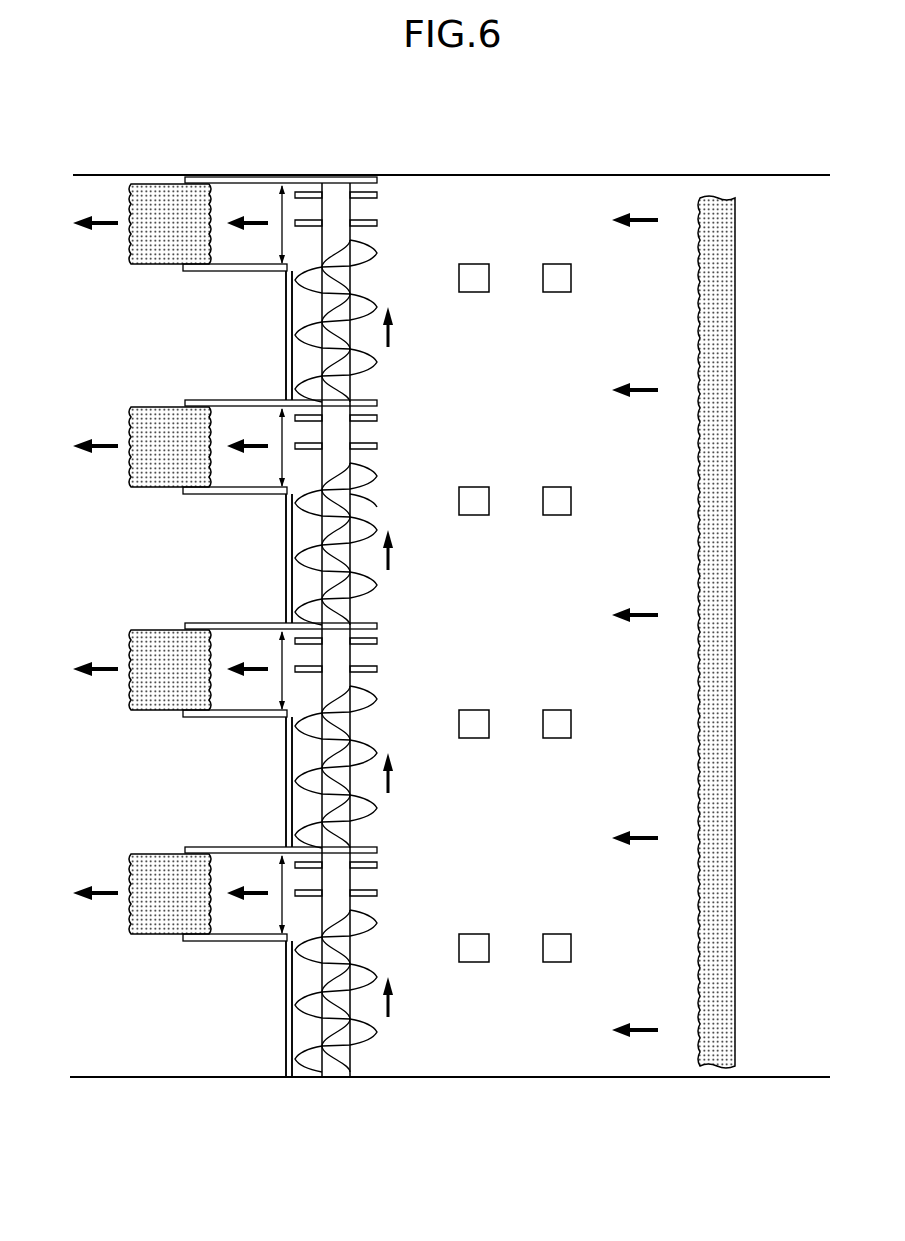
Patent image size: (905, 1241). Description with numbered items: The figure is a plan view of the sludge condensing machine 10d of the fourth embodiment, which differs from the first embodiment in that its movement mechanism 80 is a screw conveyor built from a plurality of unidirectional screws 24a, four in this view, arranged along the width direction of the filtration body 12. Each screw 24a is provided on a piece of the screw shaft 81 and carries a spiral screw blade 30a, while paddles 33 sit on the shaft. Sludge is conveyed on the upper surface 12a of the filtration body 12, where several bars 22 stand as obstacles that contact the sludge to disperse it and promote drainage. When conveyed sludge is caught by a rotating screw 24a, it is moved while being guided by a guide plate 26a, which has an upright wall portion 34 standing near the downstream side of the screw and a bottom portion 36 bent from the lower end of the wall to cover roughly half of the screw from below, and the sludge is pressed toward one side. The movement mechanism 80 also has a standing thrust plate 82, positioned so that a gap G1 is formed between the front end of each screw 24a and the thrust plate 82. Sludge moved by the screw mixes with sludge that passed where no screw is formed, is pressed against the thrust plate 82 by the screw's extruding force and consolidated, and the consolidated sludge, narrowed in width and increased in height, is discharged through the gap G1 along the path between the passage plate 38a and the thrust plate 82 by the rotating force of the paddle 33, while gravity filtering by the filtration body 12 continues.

The sludge condensing machine 10d is at (113, 107).
The filtration body 12 is at (624, 176).
The upper surface of the filtration body 12a is at (573, 193).
The bar 22 is at (560, 293).
The screw 24a is at (402, 291).
The guide plate 26a is at (286, 295).
The screw blade 30a is at (378, 359).
The paddle 33 is at (377, 195).
The wall portion 34 is at (286, 333).
The bottom portion 36 is at (300, 369).
The passage plate 38a is at (192, 272).
The movement mechanism 80 is at (313, 115).
The screw shaft 81 is at (350, 510).
The thrust plate 82 is at (355, 177).
The gap G1 is at (179, 559).